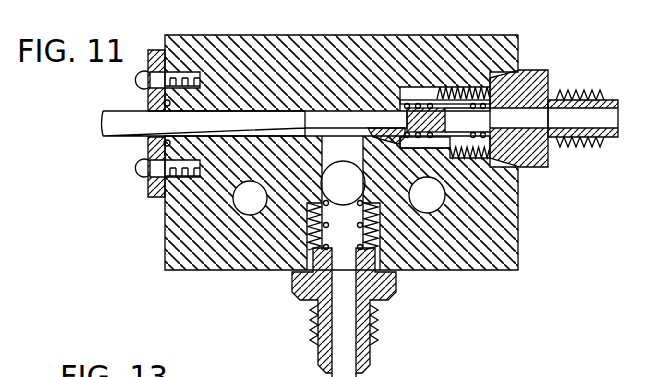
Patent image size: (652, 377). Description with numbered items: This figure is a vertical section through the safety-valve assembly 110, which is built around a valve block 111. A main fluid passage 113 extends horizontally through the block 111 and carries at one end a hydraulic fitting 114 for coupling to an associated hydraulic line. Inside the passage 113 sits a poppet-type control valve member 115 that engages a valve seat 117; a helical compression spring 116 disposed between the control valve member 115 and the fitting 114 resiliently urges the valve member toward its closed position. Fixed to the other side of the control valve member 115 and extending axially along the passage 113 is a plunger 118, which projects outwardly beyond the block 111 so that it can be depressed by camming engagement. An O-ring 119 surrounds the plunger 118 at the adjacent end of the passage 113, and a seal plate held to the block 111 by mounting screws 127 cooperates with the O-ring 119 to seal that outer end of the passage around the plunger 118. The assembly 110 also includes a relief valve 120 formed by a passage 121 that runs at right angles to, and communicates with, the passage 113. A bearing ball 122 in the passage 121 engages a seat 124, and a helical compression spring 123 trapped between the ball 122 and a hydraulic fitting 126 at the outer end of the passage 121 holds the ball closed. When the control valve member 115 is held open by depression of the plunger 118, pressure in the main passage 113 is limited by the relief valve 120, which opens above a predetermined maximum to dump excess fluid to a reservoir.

The safety-valve assembly 110 is at (138, 233).
The valve block 111 is at (378, 47).
The main fluid passage 113 is at (422, 96).
The hydraulic fitting 114 is at (548, 92).
The control valve member 115 is at (350, 75).
The helical compression spring 116 is at (433, 95).
The valve seat 117 is at (382, 100).
The plunger 118 is at (125, 139).
The O-ring 119 is at (148, 103).
The relief valve 120 is at (296, 303).
The passage 121 is at (308, 127).
The bearing ball 122 is at (320, 180).
The helical compression spring 123 is at (306, 255).
The seat 124 is at (373, 150).
The hydraulic fitting 126 is at (152, 195).
The mounting screws 127 is at (147, 72).